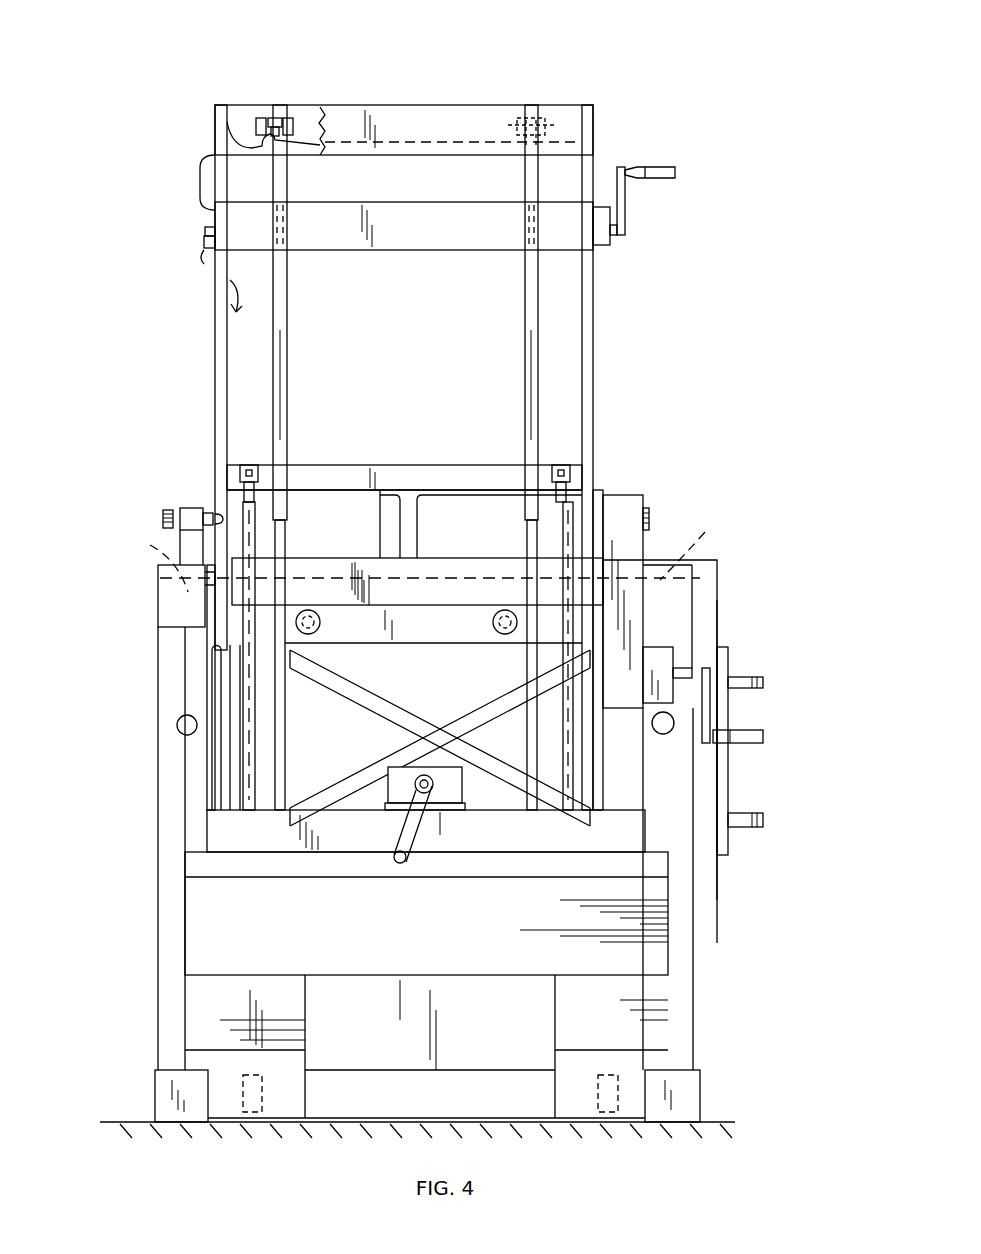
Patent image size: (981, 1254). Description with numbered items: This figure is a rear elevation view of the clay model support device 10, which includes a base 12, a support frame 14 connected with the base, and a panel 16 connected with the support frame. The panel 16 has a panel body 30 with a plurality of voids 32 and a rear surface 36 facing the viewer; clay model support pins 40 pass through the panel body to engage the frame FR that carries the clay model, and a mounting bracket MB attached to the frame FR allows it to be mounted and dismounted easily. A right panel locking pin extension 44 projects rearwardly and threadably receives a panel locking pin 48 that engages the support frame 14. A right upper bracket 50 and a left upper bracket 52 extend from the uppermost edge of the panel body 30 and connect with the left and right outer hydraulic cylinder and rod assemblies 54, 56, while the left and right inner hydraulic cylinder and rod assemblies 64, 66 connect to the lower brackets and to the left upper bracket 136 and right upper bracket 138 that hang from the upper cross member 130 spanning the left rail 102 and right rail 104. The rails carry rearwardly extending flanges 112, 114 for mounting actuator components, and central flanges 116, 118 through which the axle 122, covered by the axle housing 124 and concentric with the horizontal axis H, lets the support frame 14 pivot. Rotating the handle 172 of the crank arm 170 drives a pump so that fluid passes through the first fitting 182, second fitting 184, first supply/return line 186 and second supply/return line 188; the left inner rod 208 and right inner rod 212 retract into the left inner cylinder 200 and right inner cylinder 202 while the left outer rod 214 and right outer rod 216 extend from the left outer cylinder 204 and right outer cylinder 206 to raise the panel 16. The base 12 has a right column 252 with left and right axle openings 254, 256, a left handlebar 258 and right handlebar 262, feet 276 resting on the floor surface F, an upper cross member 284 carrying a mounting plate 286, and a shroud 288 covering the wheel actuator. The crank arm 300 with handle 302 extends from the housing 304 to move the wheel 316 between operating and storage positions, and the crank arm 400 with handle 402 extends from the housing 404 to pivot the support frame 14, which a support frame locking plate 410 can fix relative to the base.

The clay model support device 10 is at (704, 137).
The base 12 is at (446, 742).
The support frame 14 is at (600, 360).
The panel 16 is at (616, 490).
The panel body 30 is at (325, 465).
The voids 32 is at (380, 500).
The rear surface 36 is at (355, 473).
The clay model support pin 40 is at (310, 610).
The right panel locking pin extension 44 is at (193, 512).
The panel locking pin 48 is at (180, 515).
The right upper bracket 50 is at (560, 465).
The left upper bracket 52 is at (248, 465).
The left outer hydraulic cylinder and rod assembly 54 is at (590, 730).
The right outer hydraulic cylinder and rod assembly 56 is at (262, 741).
The left inner hydraulic cylinder and rod assembly 64 is at (525, 299).
The right inner hydraulic cylinder and rod assembly 66 is at (288, 322).
The left rail 102 is at (594, 393).
The right rail 104 is at (217, 388).
The rearwardly extending flange 112 is at (596, 232).
The rearwardly extending flange 114 is at (205, 232).
The central rearwardly extending flange 116 is at (590, 622).
The central rearwardly extending flange 118 is at (225, 627).
The axle 122 is at (160, 545).
The axle housing 124 is at (420, 567).
The upper cross member 130 is at (418, 110).
The left upper bracket 136 is at (540, 118).
The right upper bracket 138 is at (290, 118).
The crank arm 170 is at (626, 203).
The handle 172 is at (665, 180).
The first fitting 182 is at (213, 214).
The second fitting 184 is at (203, 248).
The first supply/return line 186 is at (200, 168).
The second supply/return line 188 is at (245, 143).
The left inner cylinder 200 is at (525, 338).
The right inner cylinder 202 is at (288, 360).
The left outer cylinder 204 is at (572, 792).
The right outer cylinder 206 is at (245, 690).
The left inner rod 208 is at (540, 792).
The right inner rod 212 is at (288, 760).
The left outer rod 214 is at (572, 490).
The right outer rod 216 is at (245, 500).
The right column 252 is at (175, 908).
The left axle opening 254 is at (725, 560).
The right axle opening 256 is at (172, 588).
The left handlebar 258 is at (668, 730).
The right handlebar 262 is at (182, 733).
The feet 276 is at (158, 1090).
The upper cross member 284 is at (270, 838).
The mounting plate 286 is at (395, 810).
The shroud 288 is at (210, 948).
The crank arm 300 is at (410, 828).
The handle 302 is at (406, 864).
The housing 304 is at (400, 775).
The wheel 316 is at (262, 1082).
The crank arm 400 is at (710, 708).
The handle 402 is at (748, 745).
The housing 404 is at (660, 670).
The support frame locking plate 410 is at (640, 512).
The horizontal axis H is at (158, 578).
The frame FR is at (712, 590).
The mounting bracket MB is at (740, 822).
The horizontal floor surface F is at (125, 1120).